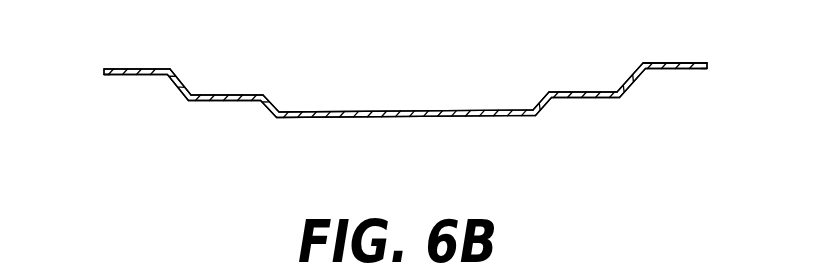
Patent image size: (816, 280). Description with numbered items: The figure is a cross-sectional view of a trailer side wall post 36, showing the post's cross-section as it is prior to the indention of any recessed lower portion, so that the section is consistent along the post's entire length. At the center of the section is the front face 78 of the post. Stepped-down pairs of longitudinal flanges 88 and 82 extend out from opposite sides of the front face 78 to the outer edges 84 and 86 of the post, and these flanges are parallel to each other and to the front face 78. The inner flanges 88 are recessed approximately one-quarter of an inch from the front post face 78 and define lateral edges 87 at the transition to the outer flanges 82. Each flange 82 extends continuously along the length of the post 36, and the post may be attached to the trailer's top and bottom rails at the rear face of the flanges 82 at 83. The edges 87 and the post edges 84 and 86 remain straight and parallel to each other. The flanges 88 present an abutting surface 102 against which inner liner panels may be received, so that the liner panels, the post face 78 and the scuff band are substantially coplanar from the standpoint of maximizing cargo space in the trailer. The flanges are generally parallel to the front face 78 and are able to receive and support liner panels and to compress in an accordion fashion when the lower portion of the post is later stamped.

The post 36 is at (378, 110).
The front face 78 is at (410, 118).
The flanges 82 is at (136, 69).
The rear face of flanges 83 is at (685, 62).
The outer edge 84 is at (104, 71).
The outer edge 86 is at (708, 66).
The lateral edges 87 is at (188, 98).
The flanges 88 is at (227, 103).
The abutting surface 102 is at (545, 104).